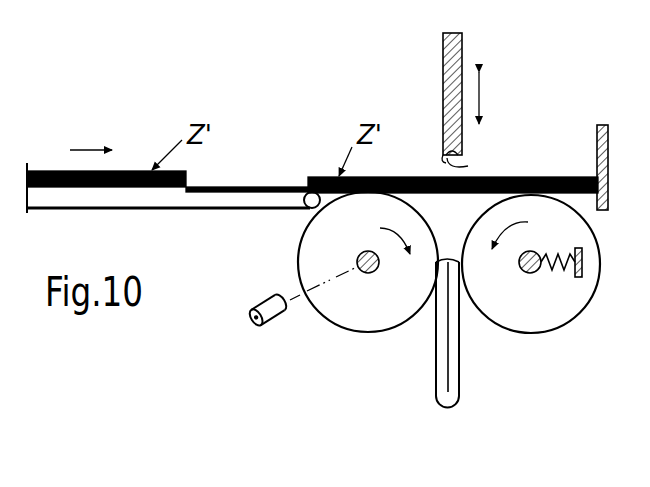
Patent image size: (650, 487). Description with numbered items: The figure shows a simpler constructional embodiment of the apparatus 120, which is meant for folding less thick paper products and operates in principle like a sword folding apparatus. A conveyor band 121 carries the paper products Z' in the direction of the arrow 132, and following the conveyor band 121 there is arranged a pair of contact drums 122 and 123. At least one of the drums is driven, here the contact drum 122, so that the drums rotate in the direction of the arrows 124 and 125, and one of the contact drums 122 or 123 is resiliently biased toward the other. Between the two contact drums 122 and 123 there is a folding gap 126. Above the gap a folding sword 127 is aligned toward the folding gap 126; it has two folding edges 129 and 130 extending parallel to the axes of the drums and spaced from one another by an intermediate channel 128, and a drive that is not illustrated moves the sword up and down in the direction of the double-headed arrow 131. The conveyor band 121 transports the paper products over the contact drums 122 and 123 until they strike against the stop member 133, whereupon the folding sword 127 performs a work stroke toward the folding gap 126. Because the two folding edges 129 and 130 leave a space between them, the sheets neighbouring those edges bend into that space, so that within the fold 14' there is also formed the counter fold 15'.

The apparatus 120 is at (306, 119).
The conveyor band 121 is at (225, 189).
The contact drum 122 is at (353, 316).
The contact drum 123 is at (566, 317).
The arrow 124 is at (378, 230).
The arrow 125 is at (531, 227).
The folding gap 126 is at (447, 258).
The folding sword 127 is at (465, 46).
The channel 128 is at (466, 165).
The folding edge 129 is at (443, 157).
The folding edge 130 is at (466, 149).
The double-headed arrow 131 is at (481, 91).
The arrow 132 is at (82, 148).
The stop member 133 is at (597, 130).
The fold 14' is at (464, 356).
The counter fold 15' is at (483, 329).